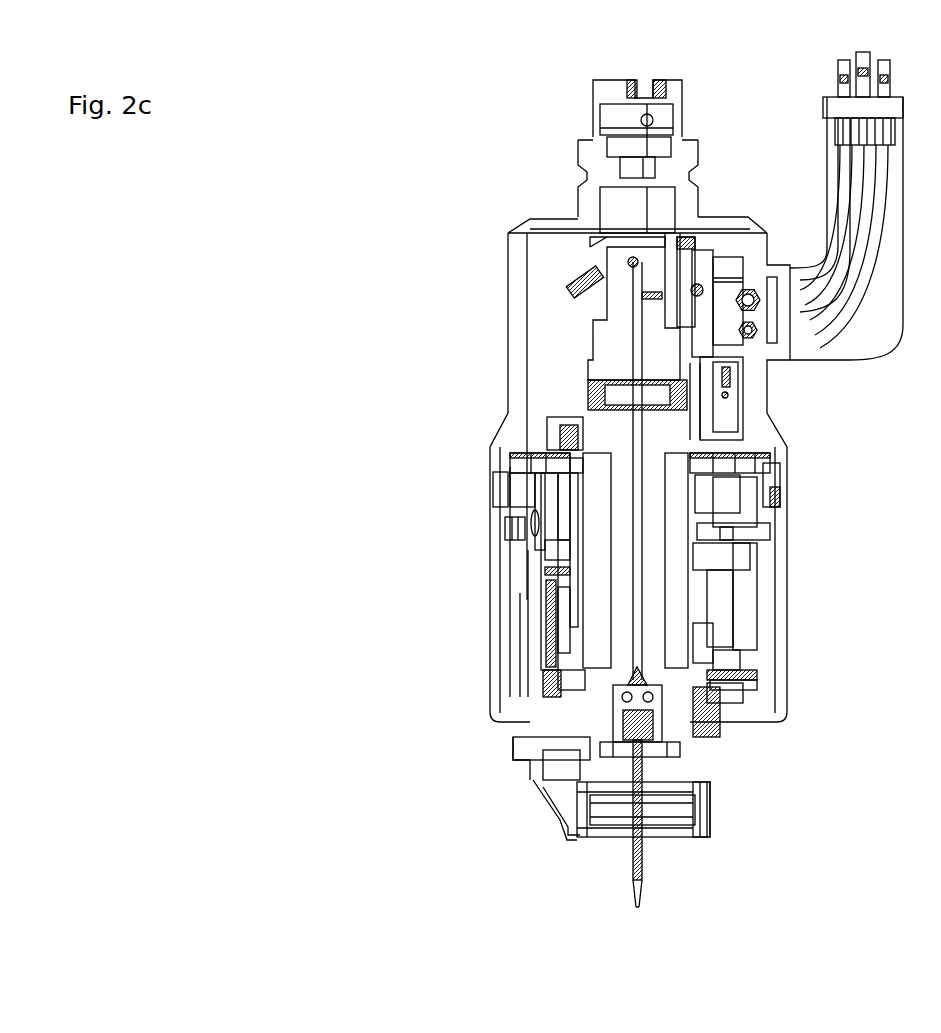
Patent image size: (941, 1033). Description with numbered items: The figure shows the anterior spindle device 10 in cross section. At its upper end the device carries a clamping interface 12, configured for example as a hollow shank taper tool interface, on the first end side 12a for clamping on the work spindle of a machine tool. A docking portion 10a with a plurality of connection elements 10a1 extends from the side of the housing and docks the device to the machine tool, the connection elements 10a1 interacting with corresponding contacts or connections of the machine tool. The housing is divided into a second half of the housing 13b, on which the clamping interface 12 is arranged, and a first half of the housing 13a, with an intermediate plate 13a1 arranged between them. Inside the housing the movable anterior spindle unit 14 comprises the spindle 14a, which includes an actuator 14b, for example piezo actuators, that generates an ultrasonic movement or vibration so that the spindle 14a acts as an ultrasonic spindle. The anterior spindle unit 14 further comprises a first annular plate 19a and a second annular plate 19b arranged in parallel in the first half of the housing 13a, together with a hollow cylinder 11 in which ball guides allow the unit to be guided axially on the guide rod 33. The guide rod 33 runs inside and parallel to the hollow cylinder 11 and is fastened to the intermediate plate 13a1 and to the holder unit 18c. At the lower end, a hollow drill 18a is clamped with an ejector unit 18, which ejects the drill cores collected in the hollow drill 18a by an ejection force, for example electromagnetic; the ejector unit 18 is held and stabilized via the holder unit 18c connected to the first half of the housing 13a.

The anterior spindle device 10 is at (390, 97).
The docking portion 10a is at (835, 340).
The connection elements 10a1 is at (855, 52).
The hollow cylinder 11 is at (750, 612).
The clamping interface 12 is at (600, 133).
The first end side 12a is at (613, 79).
The first half of the housing 13a is at (495, 690).
The intermediate plate 13a1 is at (526, 472).
The second half of the housing 13b is at (512, 366).
The anterior spindle unit 14 is at (690, 556).
The spindle 14a is at (710, 670).
The actuator 14b is at (580, 407).
The ejector unit 18 is at (708, 805).
The hollow drill 18a is at (637, 905).
The holder unit 18c is at (575, 822).
The first annular plate 19a is at (734, 690).
The second annular plate 19b is at (757, 532).
The guide rod 33 is at (533, 630).